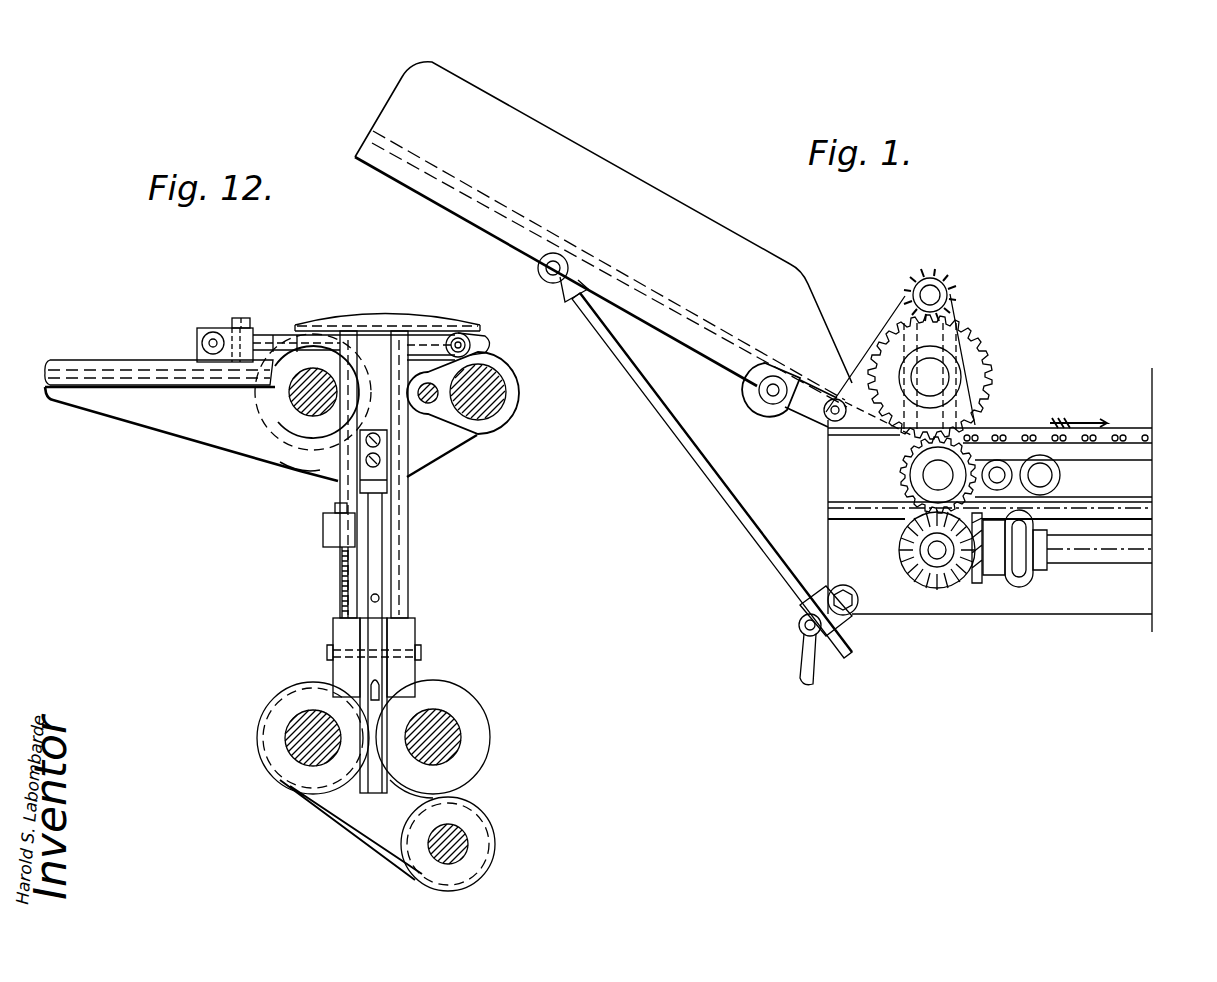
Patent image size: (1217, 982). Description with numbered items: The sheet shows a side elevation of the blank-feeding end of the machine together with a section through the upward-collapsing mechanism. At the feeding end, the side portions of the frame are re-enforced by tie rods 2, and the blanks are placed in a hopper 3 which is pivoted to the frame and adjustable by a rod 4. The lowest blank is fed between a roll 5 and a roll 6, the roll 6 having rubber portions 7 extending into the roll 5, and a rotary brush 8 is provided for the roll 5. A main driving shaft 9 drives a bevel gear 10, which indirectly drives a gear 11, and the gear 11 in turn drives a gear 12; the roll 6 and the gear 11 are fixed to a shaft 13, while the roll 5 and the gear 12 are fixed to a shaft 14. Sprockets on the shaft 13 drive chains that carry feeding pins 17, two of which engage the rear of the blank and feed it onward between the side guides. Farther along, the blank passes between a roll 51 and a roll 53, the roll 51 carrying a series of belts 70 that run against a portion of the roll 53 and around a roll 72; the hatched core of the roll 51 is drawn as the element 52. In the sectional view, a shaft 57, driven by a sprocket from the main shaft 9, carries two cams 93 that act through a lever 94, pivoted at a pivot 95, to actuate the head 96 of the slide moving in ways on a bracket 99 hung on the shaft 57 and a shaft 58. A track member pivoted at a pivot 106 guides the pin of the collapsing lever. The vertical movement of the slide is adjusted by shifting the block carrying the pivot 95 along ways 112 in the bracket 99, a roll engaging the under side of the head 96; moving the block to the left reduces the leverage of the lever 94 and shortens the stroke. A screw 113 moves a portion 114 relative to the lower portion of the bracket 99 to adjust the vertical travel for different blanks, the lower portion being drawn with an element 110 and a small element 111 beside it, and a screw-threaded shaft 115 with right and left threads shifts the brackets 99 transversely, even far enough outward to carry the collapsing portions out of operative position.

In FIG. 1, the tie rods 2 is at (1060, 480).
In FIG. 1, the hopper 3 is at (650, 202).
In FIG. 1, the rod 4 is at (640, 392).
In FIG. 1, the roll 5 is at (968, 346).
In FIG. 1, the roll 6 is at (905, 488).
In FIG. 1, the rubber portions 7 is at (877, 344).
In FIG. 1, the rotary brush 8 is at (940, 286).
In FIG. 1, the main driving shaft 9 is at (1097, 552).
In FIG. 1, the bevel gear 10 is at (925, 588).
In FIG. 1, the gear 11 is at (900, 490).
In FIG. 1, the gear 12 is at (978, 366).
In FIG. 1, the shaft 13 is at (942, 475).
In FIG. 1, the shaft 14 is at (935, 377).
In FIG. 1, the feeding pins 17 is at (990, 448).
In FIG. 12, the roll 51 is at (275, 733).
In FIG. 12, the roller shaft 52 is at (313, 750).
In FIG. 12, the roll 53 is at (478, 718).
In FIG. 12, the shaft 57 is at (305, 380).
In FIG. 12, the shaft 58 is at (490, 385).
In FIG. 12, the belts 70 is at (358, 836).
In FIG. 12, the roll 72 is at (498, 846).
In FIG. 12, the cams 93 is at (290, 471).
In FIG. 12, the lever 94 is at (318, 340).
In FIG. 12, the pivot 95 is at (210, 333).
In FIG. 12, the head 96 is at (430, 322).
In FIG. 12, the bracket 99 is at (163, 413).
In FIG. 12, the pivot 106 is at (330, 650).
In FIG. 12, the block 110 is at (330, 668).
In FIG. 12, the screw 111 is at (380, 598).
In FIG. 12, the ways 112 is at (70, 372).
In FIG. 12, the screw 113 is at (340, 571).
In FIG. 12, the portion 114 is at (405, 672).
In FIG. 12, the screw-threaded shaft 115 is at (477, 438).